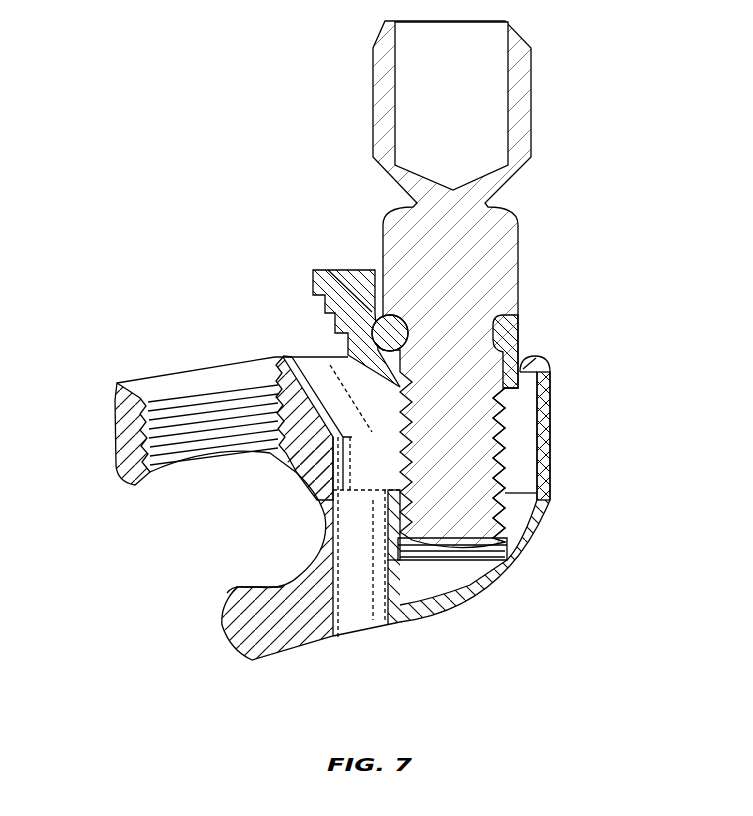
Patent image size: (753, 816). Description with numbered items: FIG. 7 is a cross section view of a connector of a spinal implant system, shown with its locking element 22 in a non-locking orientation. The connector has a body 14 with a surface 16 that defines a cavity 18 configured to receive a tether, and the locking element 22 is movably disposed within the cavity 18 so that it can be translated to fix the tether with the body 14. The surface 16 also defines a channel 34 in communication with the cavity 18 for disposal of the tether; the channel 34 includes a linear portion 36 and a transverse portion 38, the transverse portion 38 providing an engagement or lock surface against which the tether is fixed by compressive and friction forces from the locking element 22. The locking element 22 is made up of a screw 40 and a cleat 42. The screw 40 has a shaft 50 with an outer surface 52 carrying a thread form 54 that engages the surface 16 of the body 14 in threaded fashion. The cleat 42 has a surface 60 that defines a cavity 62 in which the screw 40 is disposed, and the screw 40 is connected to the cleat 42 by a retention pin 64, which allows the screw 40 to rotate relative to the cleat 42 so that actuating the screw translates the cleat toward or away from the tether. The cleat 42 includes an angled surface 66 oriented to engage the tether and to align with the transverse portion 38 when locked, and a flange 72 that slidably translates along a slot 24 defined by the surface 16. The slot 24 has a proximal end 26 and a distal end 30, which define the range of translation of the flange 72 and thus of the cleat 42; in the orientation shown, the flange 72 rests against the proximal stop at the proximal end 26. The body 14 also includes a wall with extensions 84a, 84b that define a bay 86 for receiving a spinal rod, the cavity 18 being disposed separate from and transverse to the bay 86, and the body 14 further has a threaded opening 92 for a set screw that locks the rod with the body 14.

The body 14 is at (252, 655).
The surface 16 is at (306, 396).
The cavity 18 is at (296, 392).
The locking element 22 is at (598, 100).
The slot 24 is at (520, 433).
The proximal end 26 is at (548, 367).
The distal end 30 is at (520, 530).
The channel 34 is at (360, 568).
The linear portion 36 is at (403, 558).
The transverse portion 38 is at (326, 382).
The screw 40 is at (373, 80).
The cleat 42 is at (350, 270).
The shaft 50 is at (457, 502).
The outer surface 52 is at (505, 452).
The thread form 54 is at (505, 415).
The surface 60 is at (519, 316).
The cavity 62 is at (522, 342).
The retention pin 64 is at (330, 270).
The surface 66 is at (334, 392).
The flange 72 is at (550, 385).
The extension 84a is at (130, 445).
The extension 84b is at (235, 620).
The bay 86 is at (163, 547).
The opening 92 is at (145, 385).